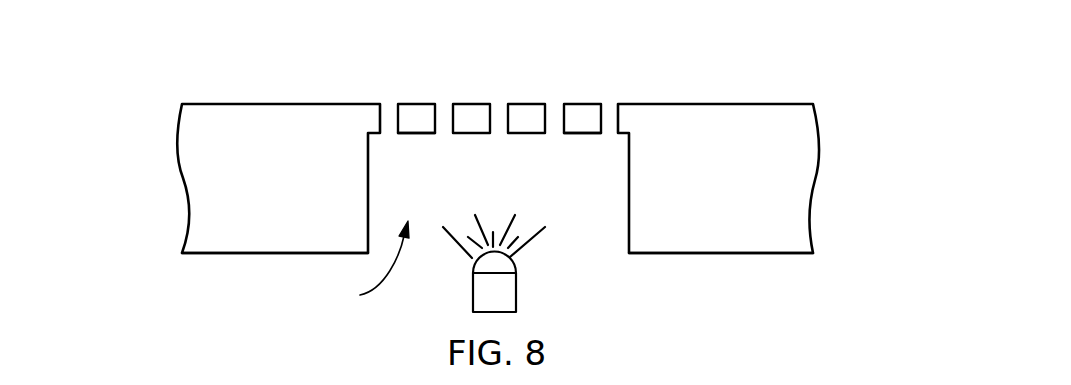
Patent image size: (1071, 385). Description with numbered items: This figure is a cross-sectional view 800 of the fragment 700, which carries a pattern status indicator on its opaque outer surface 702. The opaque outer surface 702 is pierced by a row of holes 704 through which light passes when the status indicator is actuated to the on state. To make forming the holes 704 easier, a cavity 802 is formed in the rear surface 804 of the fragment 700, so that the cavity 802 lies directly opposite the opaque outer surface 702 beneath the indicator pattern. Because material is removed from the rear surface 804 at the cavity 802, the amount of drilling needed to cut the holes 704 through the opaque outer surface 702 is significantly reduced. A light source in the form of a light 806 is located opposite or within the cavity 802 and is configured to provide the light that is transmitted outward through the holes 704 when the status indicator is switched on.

The cross-sectional view 800 is at (182, 46).
The fragment 700 is at (177, 150).
The opaque outer surface 702 is at (310, 103).
The holes 704 is at (445, 112).
The cavity 802 is at (359, 265).
The rear surface 804 is at (416, 134).
The light 806 is at (497, 268).